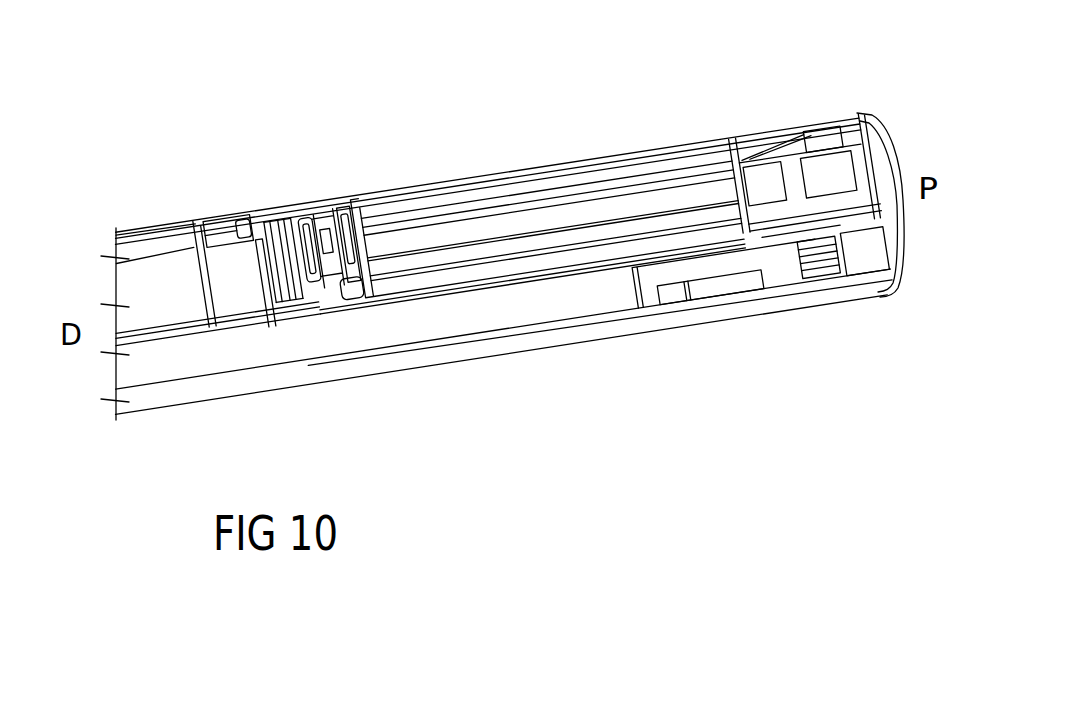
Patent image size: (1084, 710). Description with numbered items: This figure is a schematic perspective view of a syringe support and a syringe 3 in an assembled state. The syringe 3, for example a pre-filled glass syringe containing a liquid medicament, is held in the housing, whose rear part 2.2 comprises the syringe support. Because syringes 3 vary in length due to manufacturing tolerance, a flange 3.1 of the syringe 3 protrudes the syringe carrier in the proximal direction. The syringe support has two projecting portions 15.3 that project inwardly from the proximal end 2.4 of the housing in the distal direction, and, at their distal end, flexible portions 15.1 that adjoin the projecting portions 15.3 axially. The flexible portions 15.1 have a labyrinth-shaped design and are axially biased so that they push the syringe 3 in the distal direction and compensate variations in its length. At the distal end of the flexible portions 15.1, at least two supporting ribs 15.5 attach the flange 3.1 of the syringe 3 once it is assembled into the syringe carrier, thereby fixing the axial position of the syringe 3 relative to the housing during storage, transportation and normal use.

The syringe 3 is at (156, 276).
The flange 3.1 is at (275, 226).
The supporting ribs 15.5 is at (291, 226).
The flexible portions 15.1 is at (318, 303).
The projecting portions 15.3 is at (492, 210).
The rear part 2.2 is at (756, 122).
The proximal end 2.4 is at (878, 137).